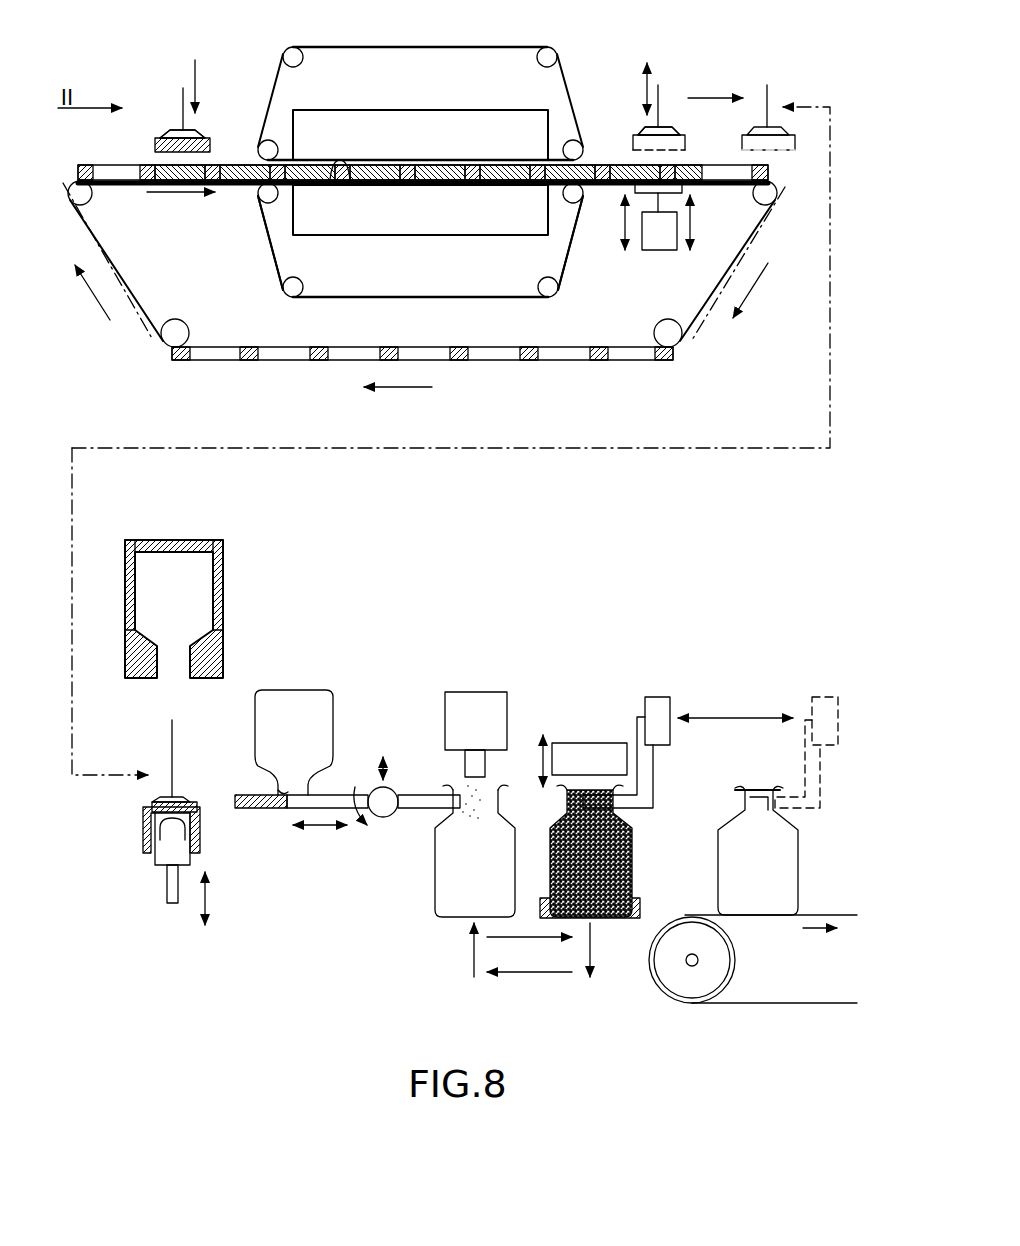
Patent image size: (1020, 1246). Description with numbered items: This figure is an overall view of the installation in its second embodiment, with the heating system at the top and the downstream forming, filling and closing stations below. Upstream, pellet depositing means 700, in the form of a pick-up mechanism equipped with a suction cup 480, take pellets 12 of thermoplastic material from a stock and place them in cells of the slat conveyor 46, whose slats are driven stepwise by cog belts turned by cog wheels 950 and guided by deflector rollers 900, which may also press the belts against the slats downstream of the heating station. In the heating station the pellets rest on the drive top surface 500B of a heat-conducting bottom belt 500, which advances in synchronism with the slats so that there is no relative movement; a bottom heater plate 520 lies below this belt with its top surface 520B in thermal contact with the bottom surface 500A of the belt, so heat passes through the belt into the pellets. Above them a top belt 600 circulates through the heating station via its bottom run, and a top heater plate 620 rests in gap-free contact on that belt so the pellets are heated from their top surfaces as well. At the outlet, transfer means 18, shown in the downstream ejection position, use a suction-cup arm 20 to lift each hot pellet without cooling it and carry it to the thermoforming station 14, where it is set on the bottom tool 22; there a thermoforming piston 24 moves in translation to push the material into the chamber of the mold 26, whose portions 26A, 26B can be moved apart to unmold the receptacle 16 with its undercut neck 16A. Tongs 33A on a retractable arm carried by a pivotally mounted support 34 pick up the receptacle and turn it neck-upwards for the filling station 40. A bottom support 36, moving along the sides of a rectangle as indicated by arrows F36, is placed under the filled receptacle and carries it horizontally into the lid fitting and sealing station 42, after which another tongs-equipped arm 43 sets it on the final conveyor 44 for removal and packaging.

The thermoforming station 14 is at (108, 473).
The conveyor belt 46 is at (112, 165).
The cog wheels 950 is at (85, 195).
The top belt 600 is at (418, 47).
The top heater plate 620 is at (420, 112).
The bottom belt 500 is at (345, 298).
The bottom surface of the conveyor belt 500A is at (283, 200).
The drive top surface 500B is at (465, 190).
The bottom heater plate 520 is at (420, 215).
The top surface of the bottom heater plate 520B is at (342, 172).
The deflector rollers 900 is at (549, 47).
The pellet depositing means 700 is at (165, 105).
The suction cup 480 is at (197, 128).
The transfer means 18 is at (668, 85).
The suction-cup arm 20 is at (640, 132).
The pellets 12 is at (158, 145).
The thermoforming mold 26 is at (133, 678).
The mold portion 26A is at (222, 588).
The mold portion 26B is at (125, 580).
The bottom tool 22 is at (200, 832).
The thermoforming piston 24 is at (157, 858).
The receptacle 16 is at (298, 690).
The neck 16A is at (275, 790).
The tongs 33A is at (290, 810).
The pivotally mounted support 34 is at (388, 812).
The filling station 40 is at (478, 692).
The lid fitting and sealing station 42 is at (588, 743).
The arm with tongs 43 is at (822, 779).
The bottom support 36 is at (640, 910).
The output conveyor 44 is at (660, 985).
The arrows F36 is at (532, 962).